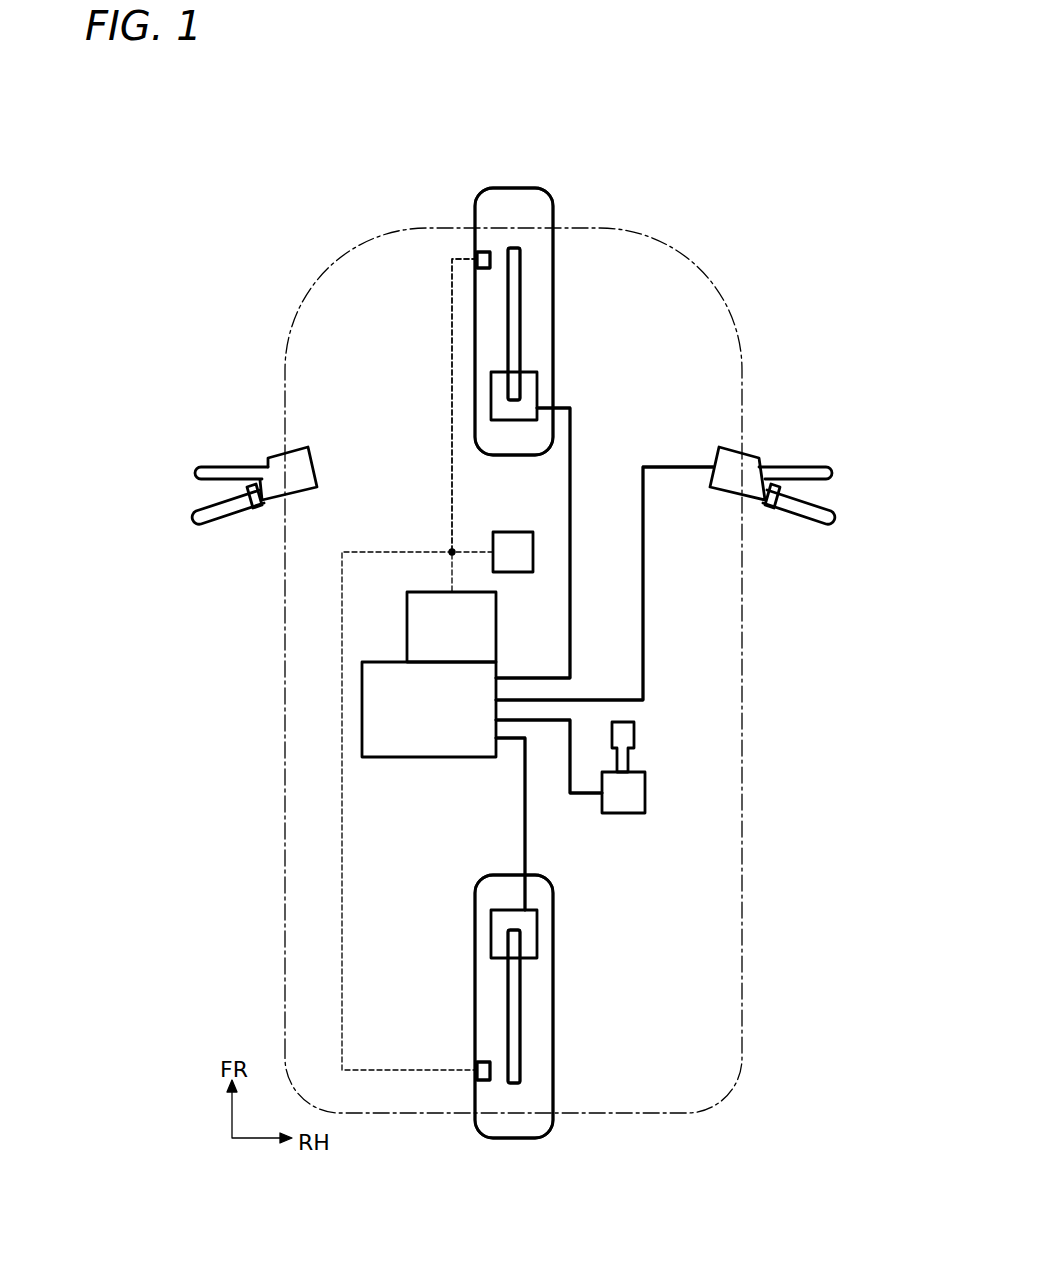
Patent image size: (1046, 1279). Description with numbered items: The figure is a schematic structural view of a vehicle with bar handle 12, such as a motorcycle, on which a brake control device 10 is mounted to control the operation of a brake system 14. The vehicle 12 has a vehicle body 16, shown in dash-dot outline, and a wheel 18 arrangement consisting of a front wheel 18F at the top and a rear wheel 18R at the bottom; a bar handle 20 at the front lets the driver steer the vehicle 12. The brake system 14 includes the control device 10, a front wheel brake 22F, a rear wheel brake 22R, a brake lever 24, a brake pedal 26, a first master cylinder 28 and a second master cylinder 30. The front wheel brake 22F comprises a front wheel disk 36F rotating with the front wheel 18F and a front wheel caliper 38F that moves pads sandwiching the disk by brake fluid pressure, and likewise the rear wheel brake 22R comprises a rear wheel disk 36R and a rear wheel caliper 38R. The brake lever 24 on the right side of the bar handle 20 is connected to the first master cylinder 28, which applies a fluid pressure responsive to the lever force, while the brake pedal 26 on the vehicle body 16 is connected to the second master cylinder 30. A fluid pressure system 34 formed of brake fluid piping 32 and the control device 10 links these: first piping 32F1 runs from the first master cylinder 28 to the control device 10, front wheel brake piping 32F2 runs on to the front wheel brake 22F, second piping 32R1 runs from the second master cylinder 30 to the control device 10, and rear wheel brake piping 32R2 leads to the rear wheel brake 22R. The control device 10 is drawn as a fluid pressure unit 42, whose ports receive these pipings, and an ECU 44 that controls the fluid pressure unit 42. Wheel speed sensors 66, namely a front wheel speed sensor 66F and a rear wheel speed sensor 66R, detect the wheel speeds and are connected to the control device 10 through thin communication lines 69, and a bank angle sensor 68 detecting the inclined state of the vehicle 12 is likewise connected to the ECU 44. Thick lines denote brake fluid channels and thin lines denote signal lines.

The brake control device 10 is at (400, 574).
The vehicle with bar handle 12 is at (325, 156).
The brake system 14 is at (343, 347).
The vehicle body 16 is at (702, 272).
The wheel 18 is at (513, 181).
The front wheel 18F is at (552, 194).
The rear wheel 18R is at (550, 1137).
The bar handle 20 is at (275, 456).
The front wheel brake 22F is at (524, 290).
The rear wheel brake 22R is at (524, 1045).
The brake lever 24 is at (804, 467).
The brake pedal 26 is at (635, 736).
The first master cylinder 28 is at (748, 464).
The second master cylinder 30 is at (646, 794).
The brake fluid piping 32 is at (604, 659).
The first piping 32F1 is at (663, 466).
The front wheel brake piping 32F2 is at (573, 582).
The second piping 32R1 is at (580, 796).
The rear wheel brake piping 32R2 is at (526, 858).
The fluid pressure system 34 is at (690, 640).
The front wheel disk 36F is at (520, 334).
The rear wheel disk 36R is at (520, 1003).
The front wheel caliper 38F is at (537, 374).
The rear wheel caliper 38R is at (537, 956).
The fluid pressure unit 42 is at (450, 757).
The ECU 44 is at (407, 628).
The wheel speed sensors 66 is at (483, 666).
The front wheel speed sensor 66F is at (485, 272).
The rear wheel speed sensor 66R is at (484, 1062).
The bank angle sensor 68 is at (513, 532).
The communication lines 69 is at (452, 448).